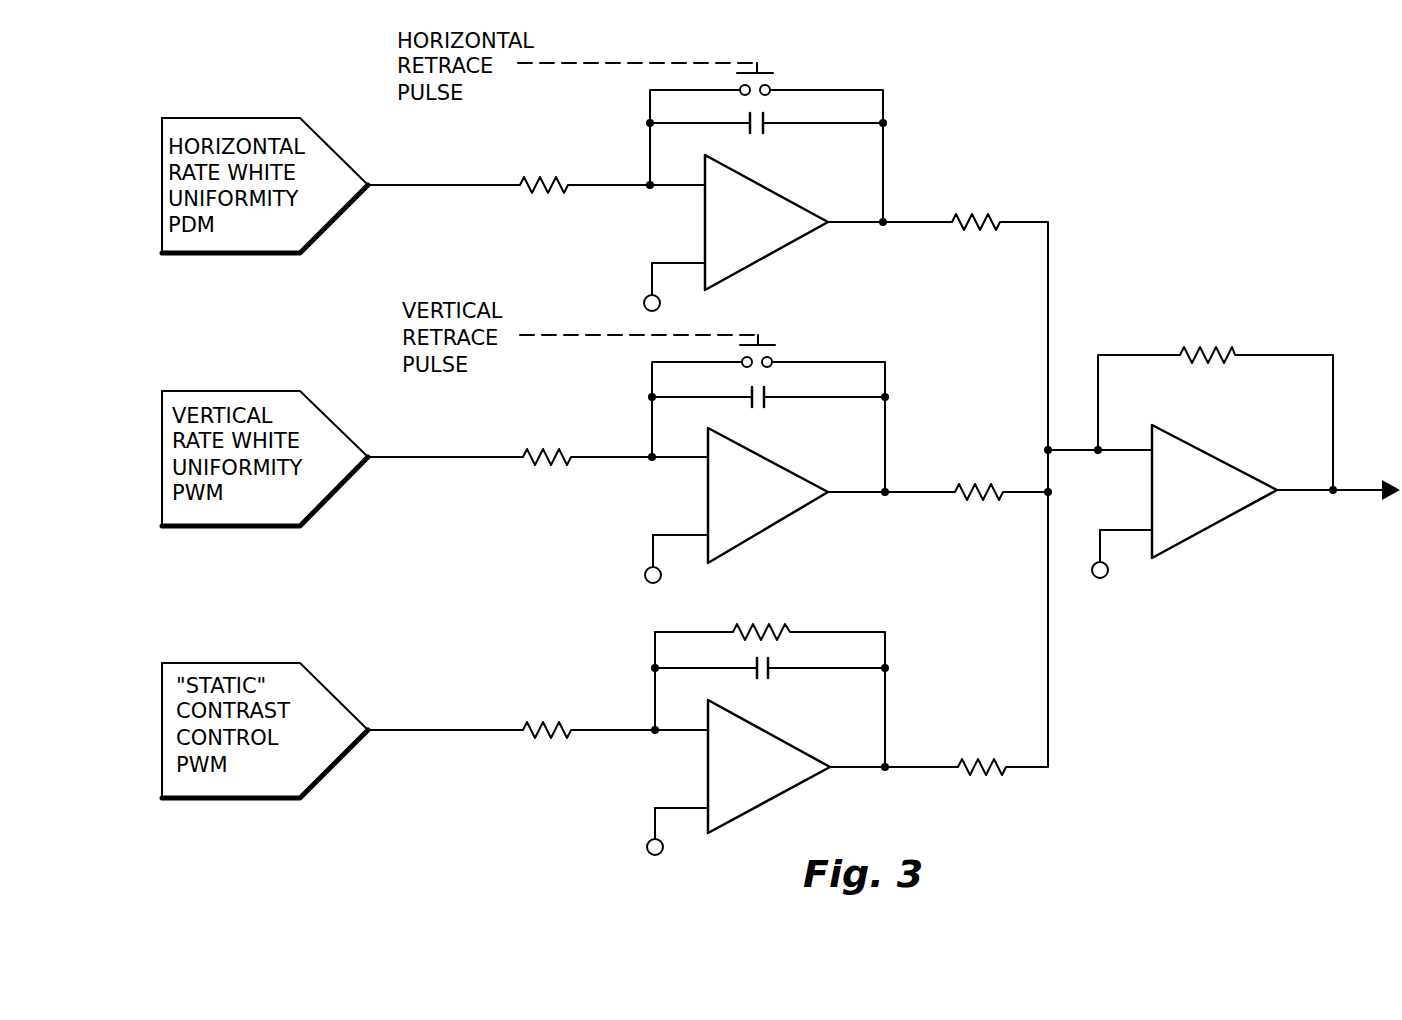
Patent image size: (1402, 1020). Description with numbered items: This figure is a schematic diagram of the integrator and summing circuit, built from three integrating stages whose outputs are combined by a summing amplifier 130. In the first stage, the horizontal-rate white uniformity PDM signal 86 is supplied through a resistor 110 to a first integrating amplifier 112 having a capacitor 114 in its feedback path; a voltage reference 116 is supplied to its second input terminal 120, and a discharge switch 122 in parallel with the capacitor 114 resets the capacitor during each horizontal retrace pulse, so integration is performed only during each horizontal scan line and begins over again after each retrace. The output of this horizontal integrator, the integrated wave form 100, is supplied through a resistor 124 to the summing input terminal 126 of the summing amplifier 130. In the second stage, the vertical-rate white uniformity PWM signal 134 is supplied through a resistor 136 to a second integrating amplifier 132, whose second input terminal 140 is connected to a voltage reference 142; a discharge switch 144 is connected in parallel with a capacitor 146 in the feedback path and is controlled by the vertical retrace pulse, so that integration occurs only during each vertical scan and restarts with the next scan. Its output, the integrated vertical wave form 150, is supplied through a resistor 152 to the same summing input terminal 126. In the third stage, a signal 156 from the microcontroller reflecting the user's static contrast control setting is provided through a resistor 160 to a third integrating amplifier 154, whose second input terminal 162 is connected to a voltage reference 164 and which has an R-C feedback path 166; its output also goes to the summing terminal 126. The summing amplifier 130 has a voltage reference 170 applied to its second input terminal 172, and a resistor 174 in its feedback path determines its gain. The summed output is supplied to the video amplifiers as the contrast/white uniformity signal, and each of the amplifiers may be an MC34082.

The horizontal-rate white uniformity (PDM) signal 86 is at (400, 186).
The resistor 110 is at (521, 190).
The first integrating amplifier 112 is at (790, 243).
The capacitor 114 is at (763, 132).
The voltage reference 116 is at (647, 296).
The second input terminal 120 is at (703, 263).
The discharge switch 122 is at (770, 88).
The integrated wave form 100 is at (902, 220).
The resistor 124 is at (995, 208).
The vertical-rate white uniformity (PWM) signal 134 is at (440, 458).
The resistor 136 is at (537, 467).
The second integrating amplifier 132 is at (777, 513).
The second input terminal 140 is at (705, 533).
The voltage reference 142 is at (660, 582).
The discharge switch 144 is at (773, 357).
The capacitor 146 is at (767, 400).
The integrated vertical wave form 150 is at (902, 453).
The resistor 152 is at (953, 495).
The third integrating amplifier 154 is at (778, 792).
The signal 156 is at (418, 732).
The resistor 160 is at (547, 737).
The second input terminal 162 is at (707, 808).
The voltage reference 164 is at (663, 850).
The R-C feedback path 166 is at (828, 615).
The summing input terminal 126 is at (1147, 453).
The summing amplifier 130 is at (1203, 525).
The voltage reference 170 is at (1108, 570).
The second input terminal 172 is at (1150, 527).
The resistor 174 is at (1190, 352).